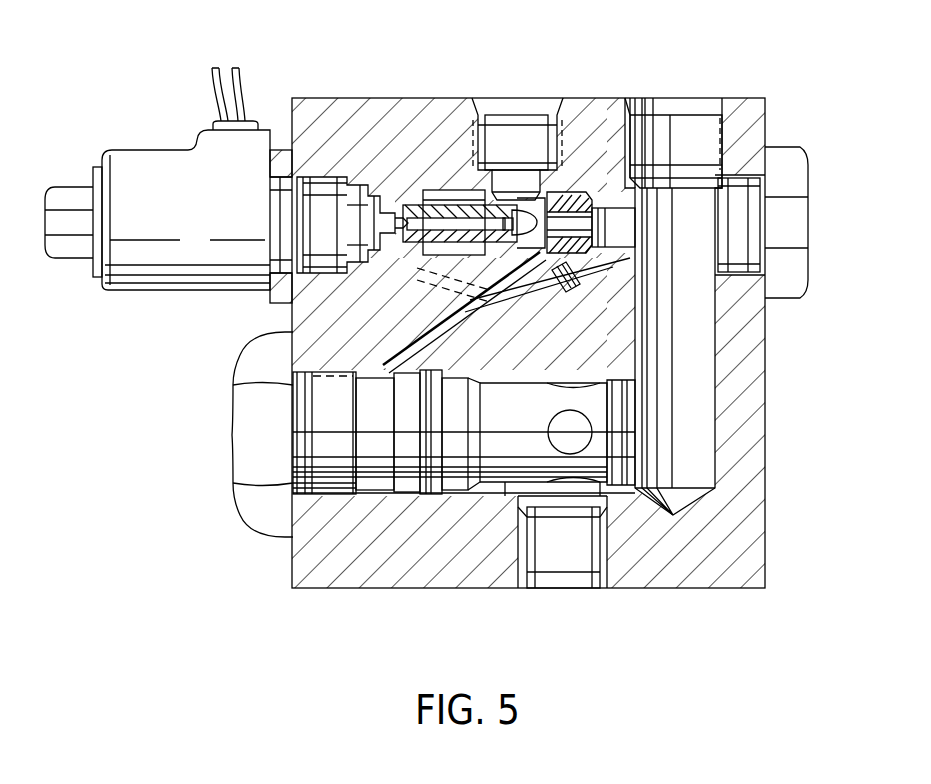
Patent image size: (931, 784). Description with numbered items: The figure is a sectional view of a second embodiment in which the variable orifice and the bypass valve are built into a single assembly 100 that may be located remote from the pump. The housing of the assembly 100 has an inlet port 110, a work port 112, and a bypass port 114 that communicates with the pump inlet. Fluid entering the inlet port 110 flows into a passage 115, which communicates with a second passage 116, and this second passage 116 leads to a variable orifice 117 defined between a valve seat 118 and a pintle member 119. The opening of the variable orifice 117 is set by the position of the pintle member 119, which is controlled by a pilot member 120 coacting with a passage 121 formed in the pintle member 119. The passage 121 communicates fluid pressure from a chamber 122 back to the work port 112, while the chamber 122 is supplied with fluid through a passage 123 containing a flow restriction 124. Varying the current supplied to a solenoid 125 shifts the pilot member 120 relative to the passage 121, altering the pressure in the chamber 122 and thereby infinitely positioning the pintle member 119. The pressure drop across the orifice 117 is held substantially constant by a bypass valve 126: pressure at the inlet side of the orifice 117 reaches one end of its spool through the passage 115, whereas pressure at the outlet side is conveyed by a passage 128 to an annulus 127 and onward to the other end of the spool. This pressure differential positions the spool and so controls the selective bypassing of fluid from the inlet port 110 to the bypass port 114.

The assembly 100 is at (840, 40).
The inlet port 110 is at (672, 96).
The work port 112 is at (515, 58).
The bypass port 114 is at (597, 583).
The passage 115 is at (713, 321).
The second passage 116 is at (636, 232).
The variable orifice 117 is at (564, 173).
The valve seat 118 is at (603, 218).
The pintle member 119 is at (415, 206).
The pilot member 120 is at (392, 196).
The passage 121 is at (424, 221).
The chamber 122 is at (405, 260).
The passage 123 is at (604, 262).
The flow restriction 124 is at (562, 293).
The solenoid 125 is at (134, 292).
The bypass valve 126 is at (222, 491).
The annulus 127 is at (372, 494).
The passage 128 is at (438, 320).